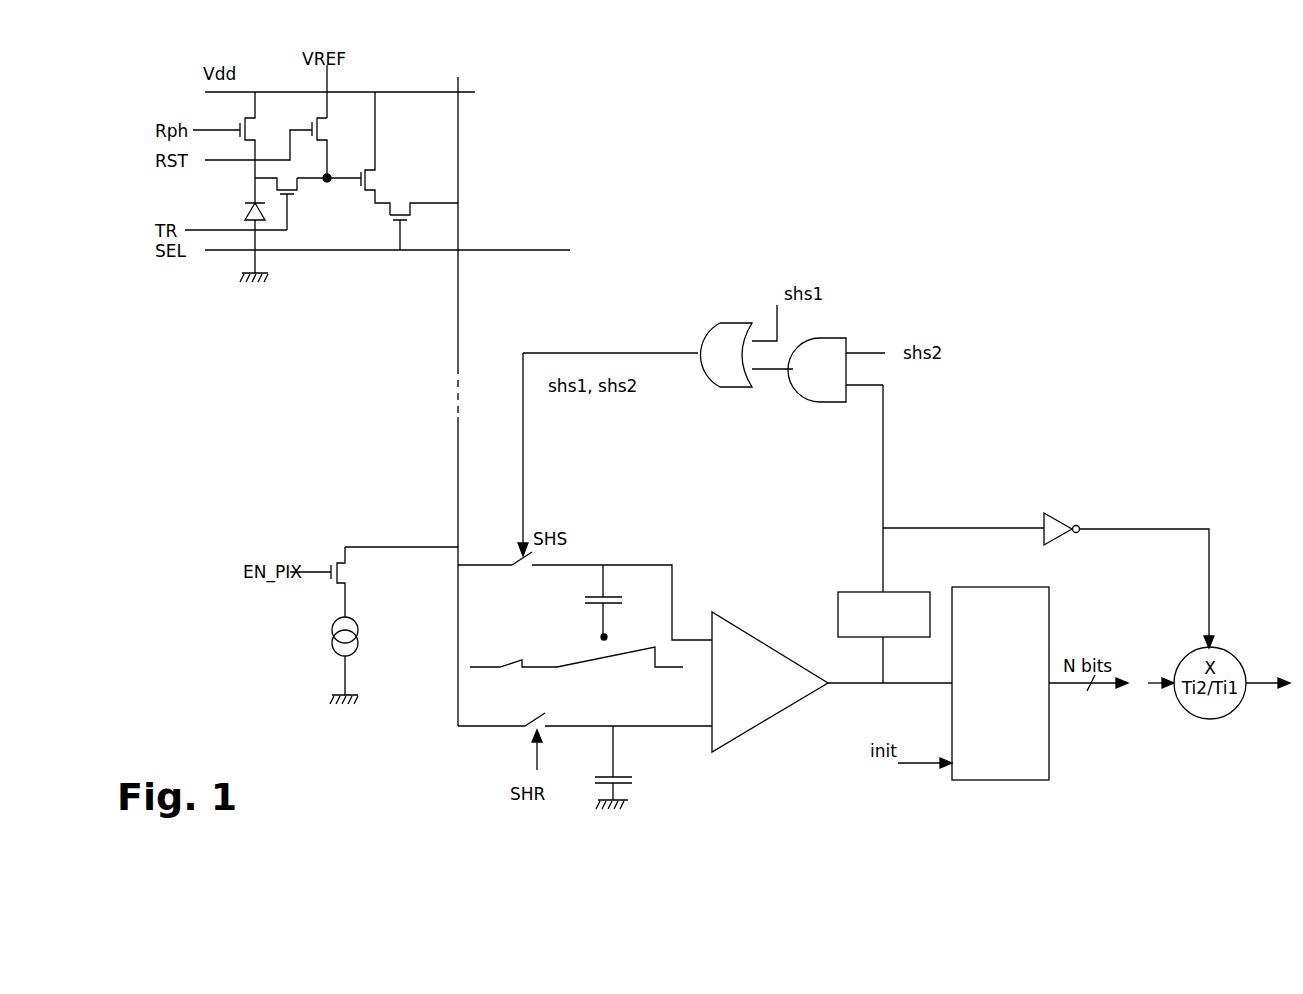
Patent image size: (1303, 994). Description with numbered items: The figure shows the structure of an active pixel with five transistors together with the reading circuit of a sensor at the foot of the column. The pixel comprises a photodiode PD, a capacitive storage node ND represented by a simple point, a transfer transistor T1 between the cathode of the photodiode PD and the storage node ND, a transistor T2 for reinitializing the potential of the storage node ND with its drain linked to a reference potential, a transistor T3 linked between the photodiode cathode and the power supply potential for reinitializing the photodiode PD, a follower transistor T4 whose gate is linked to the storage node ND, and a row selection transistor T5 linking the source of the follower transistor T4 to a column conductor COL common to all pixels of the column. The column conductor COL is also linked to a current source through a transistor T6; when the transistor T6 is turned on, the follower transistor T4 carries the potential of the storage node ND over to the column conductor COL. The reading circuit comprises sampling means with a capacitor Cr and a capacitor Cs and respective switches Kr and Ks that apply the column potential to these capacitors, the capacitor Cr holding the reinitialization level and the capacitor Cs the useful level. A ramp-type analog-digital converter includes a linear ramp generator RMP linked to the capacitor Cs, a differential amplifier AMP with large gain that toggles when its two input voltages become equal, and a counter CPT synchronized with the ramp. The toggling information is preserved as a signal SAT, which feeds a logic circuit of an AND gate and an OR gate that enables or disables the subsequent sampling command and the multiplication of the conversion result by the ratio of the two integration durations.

The transfer transistor T1 is at (287, 204).
The storage node reinitialization transistor T2 is at (331, 148).
The photodiode reinitialization transistor T3 is at (240, 147).
The follower transistor T4 is at (381, 153).
The row selection transistor T5 is at (424, 226).
The current source transistor T6 is at (374, 582).
The photodiode PD is at (240, 241).
The capacitive storage node ND is at (329, 189).
The column conductor COL is at (480, 401).
The switch Ks is at (585, 596).
The switch Kr is at (585, 711).
The capacitor Cs is at (613, 602).
The capacitor Cr is at (626, 767).
The linear ramp generator RMP is at (576, 653).
The differential amplifier AMP is at (770, 682).
The toggling information signal SAT is at (941, 534).
The counter CPT is at (1000, 683).